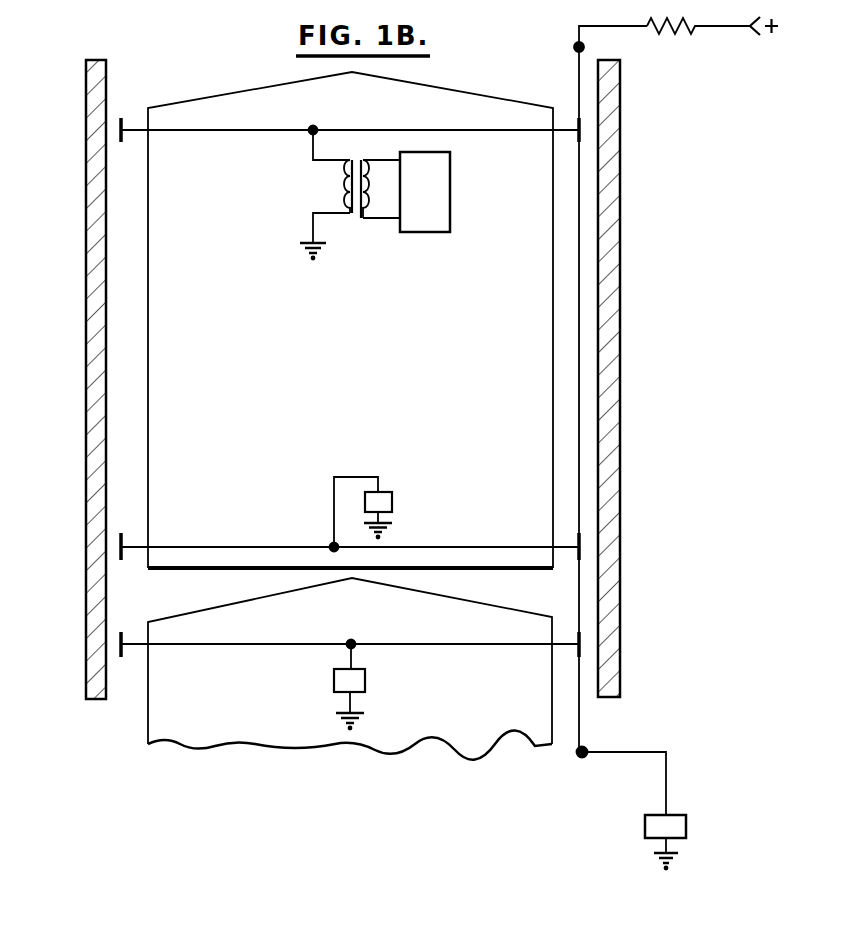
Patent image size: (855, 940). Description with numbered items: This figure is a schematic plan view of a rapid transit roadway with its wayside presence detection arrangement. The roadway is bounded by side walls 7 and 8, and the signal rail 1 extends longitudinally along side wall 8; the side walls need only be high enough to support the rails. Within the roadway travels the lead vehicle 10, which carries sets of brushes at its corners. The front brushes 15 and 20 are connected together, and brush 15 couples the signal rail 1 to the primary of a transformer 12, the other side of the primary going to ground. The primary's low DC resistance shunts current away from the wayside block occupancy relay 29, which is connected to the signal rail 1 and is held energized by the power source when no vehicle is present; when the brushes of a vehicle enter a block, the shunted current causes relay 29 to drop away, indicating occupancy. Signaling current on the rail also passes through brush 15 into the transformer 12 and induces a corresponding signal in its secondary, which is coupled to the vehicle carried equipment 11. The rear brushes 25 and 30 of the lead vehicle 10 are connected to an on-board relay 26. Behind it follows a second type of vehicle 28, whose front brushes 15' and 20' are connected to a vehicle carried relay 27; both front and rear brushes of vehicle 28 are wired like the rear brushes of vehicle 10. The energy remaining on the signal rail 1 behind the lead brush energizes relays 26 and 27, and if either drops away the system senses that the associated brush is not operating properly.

The signal rail 1 is at (579, 68).
The side wall 7 is at (88, 290).
The side wall 8 is at (612, 327).
The vehicle 10 is at (374, 342).
The vehicle carried equipment 11 is at (438, 197).
The transformer 12 is at (355, 220).
The brush 15 is at (464, 125).
The brush 15' is at (465, 621).
The brush 20 is at (231, 111).
The brush 20' is at (233, 621).
The brush 25 is at (573, 546).
The relay 26 is at (383, 500).
The relay 27 is at (333, 680).
The vehicle 28 is at (468, 705).
The block occupancy relay 29 is at (670, 826).
The brush 30 is at (130, 545).